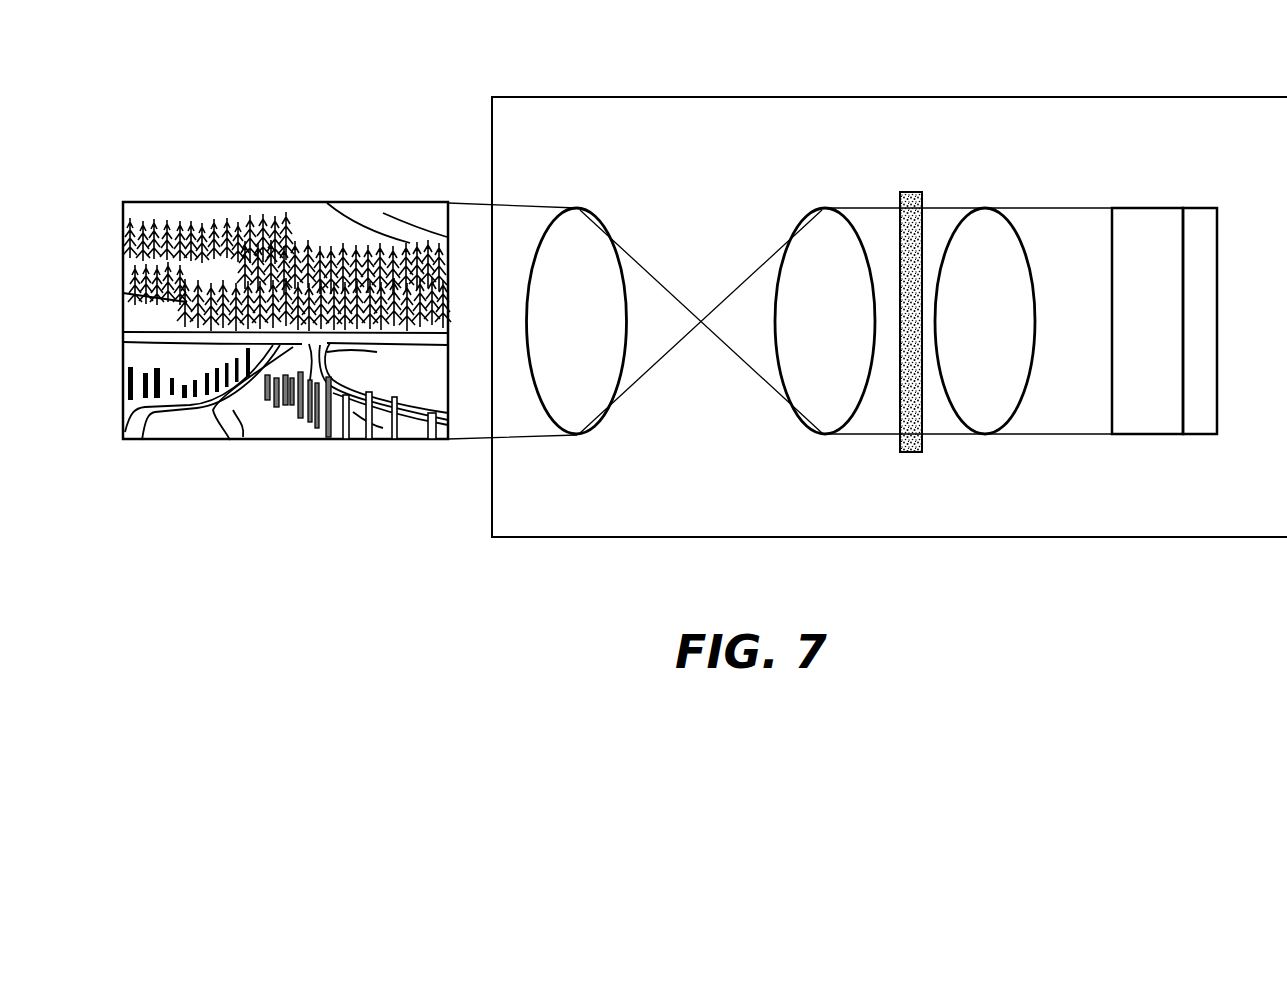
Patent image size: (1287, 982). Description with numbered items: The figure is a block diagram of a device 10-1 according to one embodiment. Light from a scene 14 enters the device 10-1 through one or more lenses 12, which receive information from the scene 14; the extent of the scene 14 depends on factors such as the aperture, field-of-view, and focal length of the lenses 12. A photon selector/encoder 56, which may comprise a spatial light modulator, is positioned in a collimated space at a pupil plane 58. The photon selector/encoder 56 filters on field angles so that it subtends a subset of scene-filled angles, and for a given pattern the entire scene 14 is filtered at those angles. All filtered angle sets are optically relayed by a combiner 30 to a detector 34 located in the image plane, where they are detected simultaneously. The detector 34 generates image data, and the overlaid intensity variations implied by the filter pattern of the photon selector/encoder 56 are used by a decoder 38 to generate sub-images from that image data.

The device 10-1 is at (1138, 96).
The scene 14 is at (284, 201).
The lenses 12 is at (577, 220).
The pupil plane 58 is at (913, 182).
The photon selector/encoder 56 is at (907, 453).
The combiner 30 is at (983, 220).
The detector 34 is at (1147, 321).
The decoder 38 is at (1205, 275).